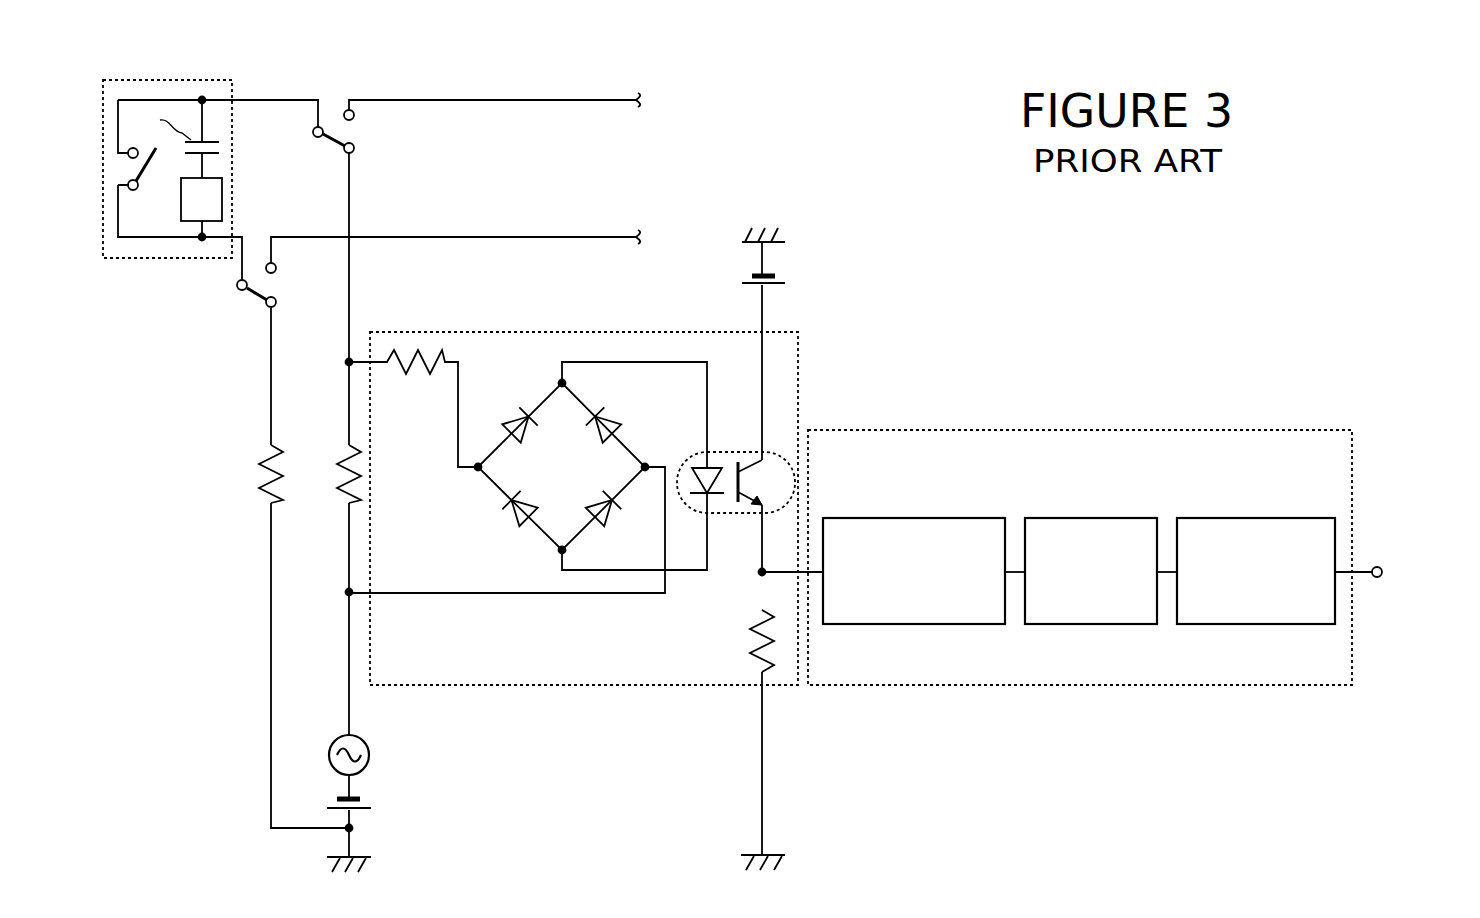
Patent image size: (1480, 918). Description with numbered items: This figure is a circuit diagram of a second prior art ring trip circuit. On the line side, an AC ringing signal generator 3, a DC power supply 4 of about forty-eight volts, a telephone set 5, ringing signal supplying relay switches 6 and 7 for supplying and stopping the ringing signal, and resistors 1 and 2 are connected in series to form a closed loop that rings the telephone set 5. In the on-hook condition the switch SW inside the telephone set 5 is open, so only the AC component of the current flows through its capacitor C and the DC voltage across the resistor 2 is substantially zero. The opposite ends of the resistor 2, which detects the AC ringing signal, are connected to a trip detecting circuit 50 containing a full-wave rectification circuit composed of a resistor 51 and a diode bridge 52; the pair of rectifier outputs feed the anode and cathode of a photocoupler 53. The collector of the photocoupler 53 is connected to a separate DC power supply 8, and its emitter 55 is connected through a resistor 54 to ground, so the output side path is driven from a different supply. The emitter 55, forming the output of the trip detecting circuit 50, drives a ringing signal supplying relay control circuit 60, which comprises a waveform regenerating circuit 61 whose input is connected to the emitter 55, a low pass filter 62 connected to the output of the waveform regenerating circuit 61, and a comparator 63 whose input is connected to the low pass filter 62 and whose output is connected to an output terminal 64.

The resistor 1 is at (258, 476).
The resistor 2 is at (336, 476).
The AC ringing signal generator 3 is at (370, 757).
The DC power supply 4 is at (333, 799).
The telephone set 5 is at (143, 80).
The ringing signal supplying relay switch 6 is at (283, 292).
The ringing signal supplying relay switch 7 is at (357, 134).
The DC power supply 8 is at (778, 280).
The trip detecting circuit 50 is at (415, 685).
The resistor 51 is at (418, 375).
The diode bridge 52 is at (522, 410).
The photocoupler 53 is at (778, 452).
The resistor 54 is at (752, 648).
The emitter 55 is at (762, 576).
The ringing signal supplying relay control circuit 60 is at (973, 685).
The waveform regenerating circuit 61 is at (925, 518).
The low pass filter 62 is at (1103, 518).
The comparator 63 is at (1282, 518).
The output terminal 64 is at (1378, 566).